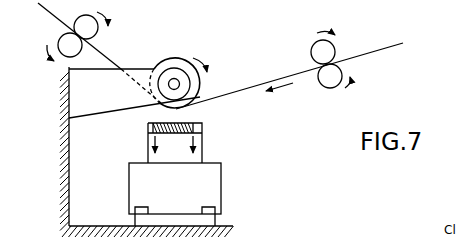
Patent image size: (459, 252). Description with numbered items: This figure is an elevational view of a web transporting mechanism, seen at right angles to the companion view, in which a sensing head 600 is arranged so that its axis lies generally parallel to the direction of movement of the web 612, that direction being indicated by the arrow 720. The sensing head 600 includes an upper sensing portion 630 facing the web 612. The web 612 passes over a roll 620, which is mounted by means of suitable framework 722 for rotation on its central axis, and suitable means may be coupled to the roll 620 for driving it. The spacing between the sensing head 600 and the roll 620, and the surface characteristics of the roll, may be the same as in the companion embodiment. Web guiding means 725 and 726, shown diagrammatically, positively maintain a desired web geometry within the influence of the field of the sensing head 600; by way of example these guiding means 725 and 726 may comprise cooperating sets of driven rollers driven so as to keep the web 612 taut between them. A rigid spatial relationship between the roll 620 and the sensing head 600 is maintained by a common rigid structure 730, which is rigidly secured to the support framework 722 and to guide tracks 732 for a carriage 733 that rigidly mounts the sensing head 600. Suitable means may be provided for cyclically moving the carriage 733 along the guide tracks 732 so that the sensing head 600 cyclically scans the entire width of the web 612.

The sensing head 600 is at (207, 138).
The web 612 is at (237, 91).
The roll 620 is at (177, 61).
The brush 630 is at (148, 131).
The arrow 720 is at (285, 87).
The framework 722 is at (83, 100).
The web guiding means 725 is at (338, 50).
The web guiding means 726 is at (98, 33).
The common rigid structure 730 is at (63, 148).
The guide tracks 732 is at (216, 219).
The carriage 733 is at (221, 183).